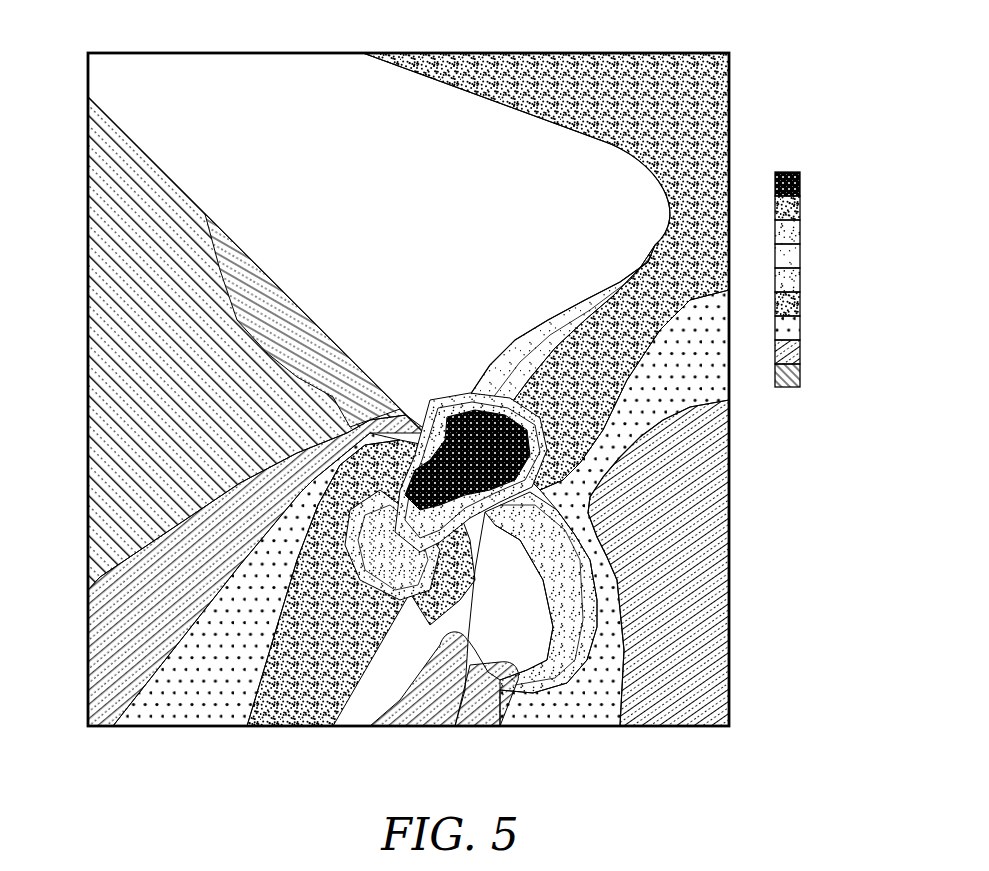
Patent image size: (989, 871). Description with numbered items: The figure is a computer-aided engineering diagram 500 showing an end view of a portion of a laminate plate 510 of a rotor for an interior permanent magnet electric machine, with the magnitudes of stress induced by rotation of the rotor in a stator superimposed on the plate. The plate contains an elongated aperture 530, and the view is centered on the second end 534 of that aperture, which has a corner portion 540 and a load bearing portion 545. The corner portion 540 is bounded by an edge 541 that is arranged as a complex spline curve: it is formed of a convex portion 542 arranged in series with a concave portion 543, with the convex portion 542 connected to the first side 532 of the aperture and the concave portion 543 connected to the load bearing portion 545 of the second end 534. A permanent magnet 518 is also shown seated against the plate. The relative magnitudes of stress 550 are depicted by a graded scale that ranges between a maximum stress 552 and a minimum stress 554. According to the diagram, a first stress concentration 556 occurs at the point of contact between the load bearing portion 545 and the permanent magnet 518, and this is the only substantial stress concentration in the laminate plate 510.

The computer-aided engineering (CAE) diagram 500 is at (389, 48).
The laminate plate 510 is at (650, 46).
The permanent magnet 518 is at (162, 383).
The elongated aperture 530 is at (379, 238).
The first side 532 is at (402, 693).
The second end 534 is at (598, 152).
The corner portion 540 is at (546, 585).
The edge 541 is at (541, 632).
The convex portion 542 is at (457, 640).
The concave portion 543 is at (500, 682).
The load bearing portion 545 is at (436, 455).
The relative magnitudes of stress 550 is at (827, 279).
The maximum stress 552 is at (807, 189).
The minimum stress 554 is at (804, 401).
The first stress concentration 556 is at (471, 472).